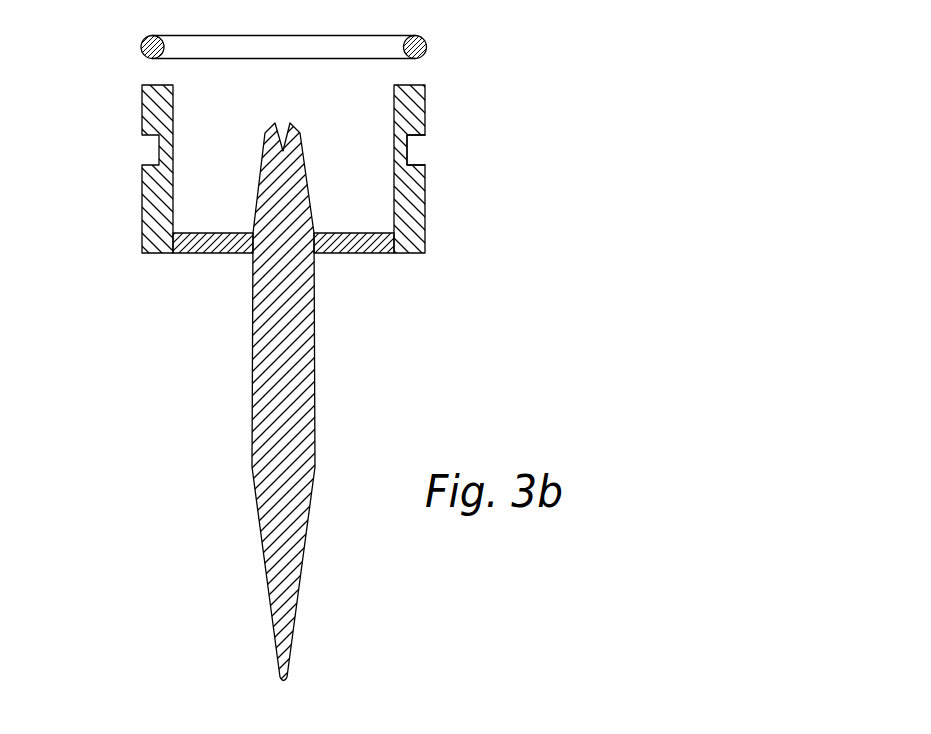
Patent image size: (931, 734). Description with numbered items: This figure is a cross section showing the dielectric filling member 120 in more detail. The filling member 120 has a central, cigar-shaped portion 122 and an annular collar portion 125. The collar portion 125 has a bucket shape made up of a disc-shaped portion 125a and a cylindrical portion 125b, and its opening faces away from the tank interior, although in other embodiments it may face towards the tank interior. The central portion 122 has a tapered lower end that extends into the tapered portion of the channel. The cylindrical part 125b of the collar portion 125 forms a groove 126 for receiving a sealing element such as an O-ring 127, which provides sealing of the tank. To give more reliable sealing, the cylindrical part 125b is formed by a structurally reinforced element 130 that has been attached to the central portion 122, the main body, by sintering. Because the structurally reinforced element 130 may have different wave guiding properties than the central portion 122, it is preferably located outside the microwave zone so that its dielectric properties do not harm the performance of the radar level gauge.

The dielectric filling member 120 is at (188, 420).
The central portion 122 is at (287, 432).
The collar portion 125 is at (450, 230).
The disc-shaped portion 125a is at (363, 240).
The cylindrical portion 125b is at (426, 111).
The groove 126 is at (410, 150).
The O-ring 127 is at (142, 40).
The structurally reinforced element 130 is at (142, 220).